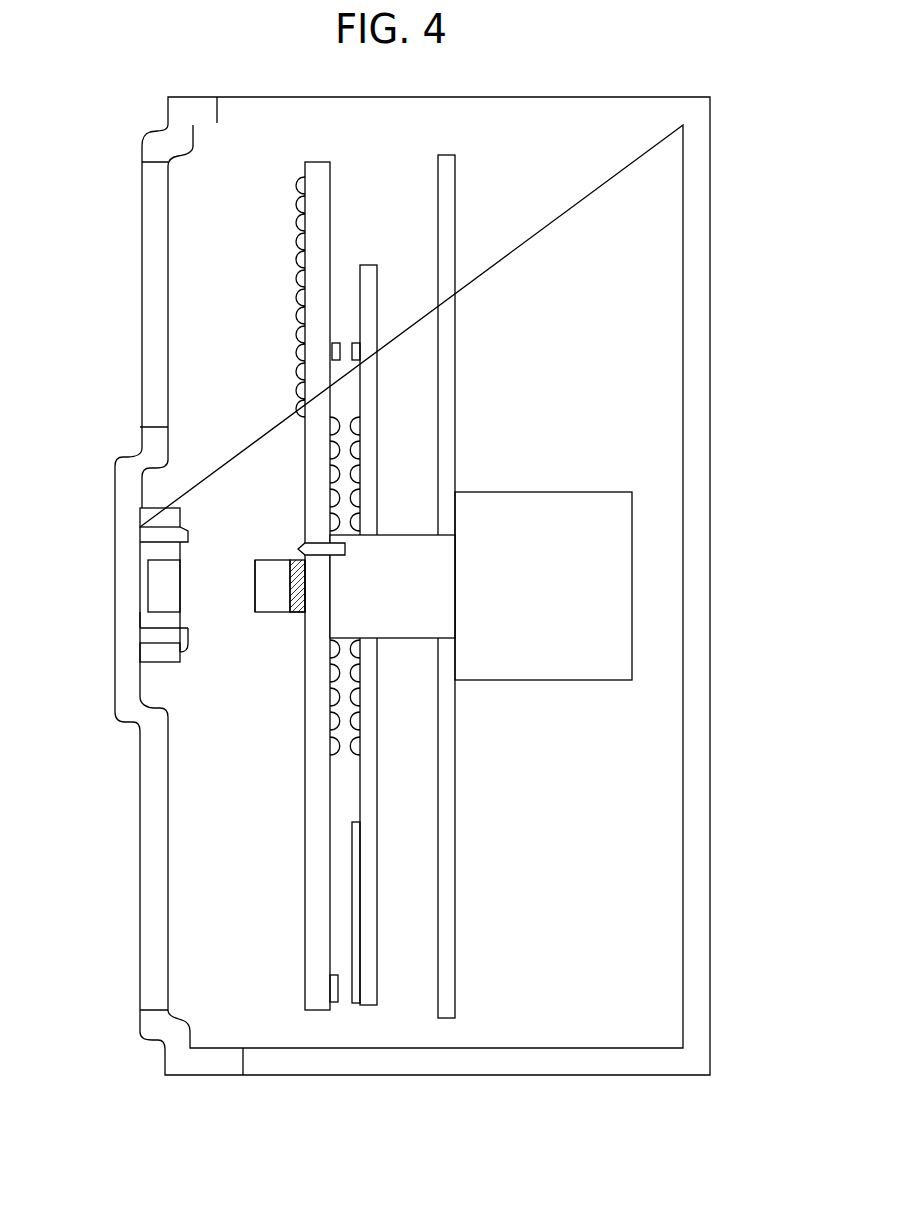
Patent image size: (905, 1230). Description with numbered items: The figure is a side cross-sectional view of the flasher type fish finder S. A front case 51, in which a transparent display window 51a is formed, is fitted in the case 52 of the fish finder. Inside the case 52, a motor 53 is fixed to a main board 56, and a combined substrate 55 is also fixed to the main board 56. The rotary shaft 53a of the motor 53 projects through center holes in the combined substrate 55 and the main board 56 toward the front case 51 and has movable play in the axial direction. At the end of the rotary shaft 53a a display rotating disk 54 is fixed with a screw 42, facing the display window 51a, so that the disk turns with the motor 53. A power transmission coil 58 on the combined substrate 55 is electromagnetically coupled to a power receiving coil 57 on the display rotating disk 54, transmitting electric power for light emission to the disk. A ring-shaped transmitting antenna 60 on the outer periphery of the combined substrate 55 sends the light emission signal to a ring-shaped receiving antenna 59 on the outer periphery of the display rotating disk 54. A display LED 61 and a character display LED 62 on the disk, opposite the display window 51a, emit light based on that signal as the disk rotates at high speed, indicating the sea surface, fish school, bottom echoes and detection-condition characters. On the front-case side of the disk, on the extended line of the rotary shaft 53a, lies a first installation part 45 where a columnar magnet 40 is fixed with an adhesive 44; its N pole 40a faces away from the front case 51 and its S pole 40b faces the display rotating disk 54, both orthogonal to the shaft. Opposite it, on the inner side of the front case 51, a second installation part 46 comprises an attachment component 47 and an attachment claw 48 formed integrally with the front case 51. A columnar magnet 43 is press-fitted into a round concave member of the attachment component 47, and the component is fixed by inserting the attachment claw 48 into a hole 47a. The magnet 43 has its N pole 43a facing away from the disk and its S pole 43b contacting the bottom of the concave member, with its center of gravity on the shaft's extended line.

The flasher type fish finder S is at (784, 111).
The magnet 40 is at (270, 560).
The N pole 40a is at (254, 572).
The S pole 40b is at (303, 613).
The screw 42 is at (347, 551).
The magnet 43 is at (180, 585).
The N pole 43a is at (184, 600).
The S pole 43b is at (150, 528).
The adhesive 44 is at (298, 597).
The first installation part 45 is at (298, 573).
The second installation part 46 is at (131, 546).
The attachment component 47 is at (176, 548).
The hole 47a is at (148, 633).
The attachment claw 48 is at (167, 640).
The front case 51 is at (150, 152).
The display window 51a is at (150, 278).
The case 52 is at (697, 222).
The motor 53 is at (537, 500).
The rotary shaft 53a is at (401, 639).
The display rotating disk 54 is at (323, 221).
The combined substrate 55 is at (371, 317).
The main board 56 is at (450, 233).
The power receiving coil 57 is at (330, 475).
The power transmission coil 58 is at (362, 447).
The receiving antenna 59 is at (330, 981).
The transmitting antenna 60 is at (357, 882).
The display LED 61 is at (298, 216).
The character display LED 62 is at (300, 373).